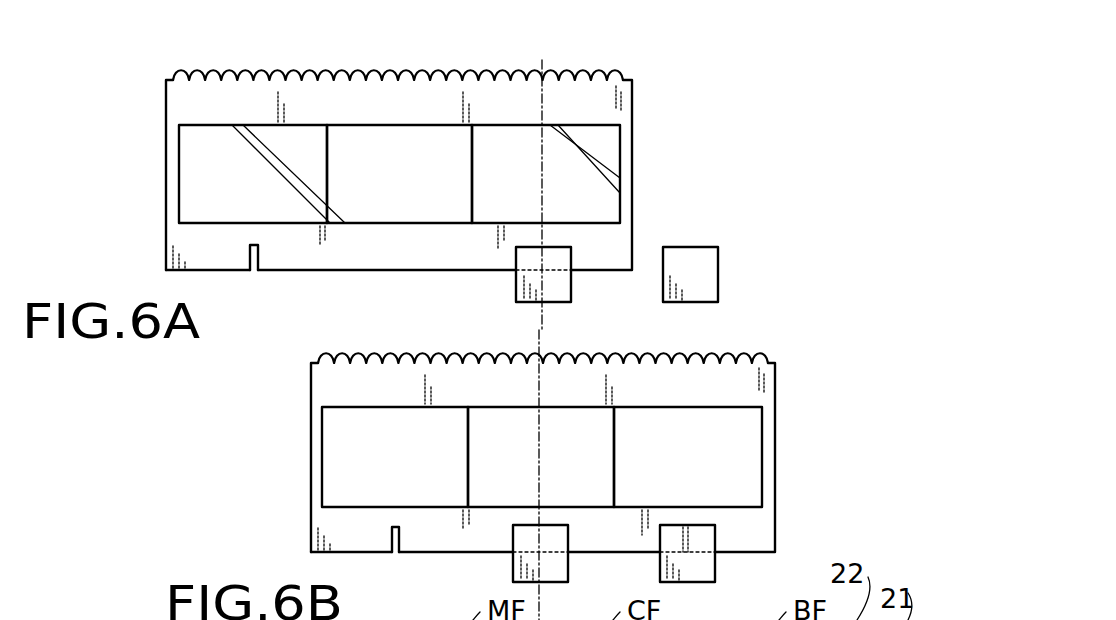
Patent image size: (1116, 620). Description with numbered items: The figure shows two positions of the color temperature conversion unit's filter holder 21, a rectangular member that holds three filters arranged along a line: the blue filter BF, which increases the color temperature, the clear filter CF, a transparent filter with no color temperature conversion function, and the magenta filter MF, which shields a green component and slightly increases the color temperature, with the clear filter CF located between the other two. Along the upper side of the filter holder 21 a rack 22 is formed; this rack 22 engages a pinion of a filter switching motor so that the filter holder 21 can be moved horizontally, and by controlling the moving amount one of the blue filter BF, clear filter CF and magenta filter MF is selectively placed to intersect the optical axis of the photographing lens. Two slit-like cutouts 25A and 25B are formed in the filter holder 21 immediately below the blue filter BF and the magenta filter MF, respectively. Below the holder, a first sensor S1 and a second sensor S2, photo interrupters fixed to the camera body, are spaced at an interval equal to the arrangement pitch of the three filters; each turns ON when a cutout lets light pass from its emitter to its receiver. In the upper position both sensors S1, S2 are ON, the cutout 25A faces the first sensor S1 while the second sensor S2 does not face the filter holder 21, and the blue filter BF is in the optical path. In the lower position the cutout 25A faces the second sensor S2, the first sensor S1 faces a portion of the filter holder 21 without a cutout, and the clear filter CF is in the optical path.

In FIG. 6A, the filter holder 21 is at (620, 101).
In FIG. 6B, the filter holder 21 is at (767, 388).
In FIG. 6A, the rack 22 is at (602, 72).
In FIG. 6B, the rack 22 is at (745, 358).
In FIG. 6A, the magenta filter MF is at (225, 142).
In FIG. 6B, the magenta filter MF is at (397, 437).
In FIG. 6A, the clear filter CF is at (370, 143).
In FIG. 6B, the clear filter CF is at (490, 437).
In FIG. 6A, the blue filter BF is at (515, 143).
In FIG. 6B, the blue filter BF is at (638, 438).
In FIG. 6A, the slit-like cutout 25B is at (258, 272).
In FIG. 6B, the slit-like cutout 25B is at (399, 554).
In FIG. 6B, the slit-like cutout 25A is at (688, 542).
In FIG. 6A, the first sensor S1 is at (547, 304).
In FIG. 6B, the first sensor S1 is at (545, 584).
In FIG. 6A, the second sensor S2 is at (687, 304).
In FIG. 6B, the second sensor S2 is at (685, 584).